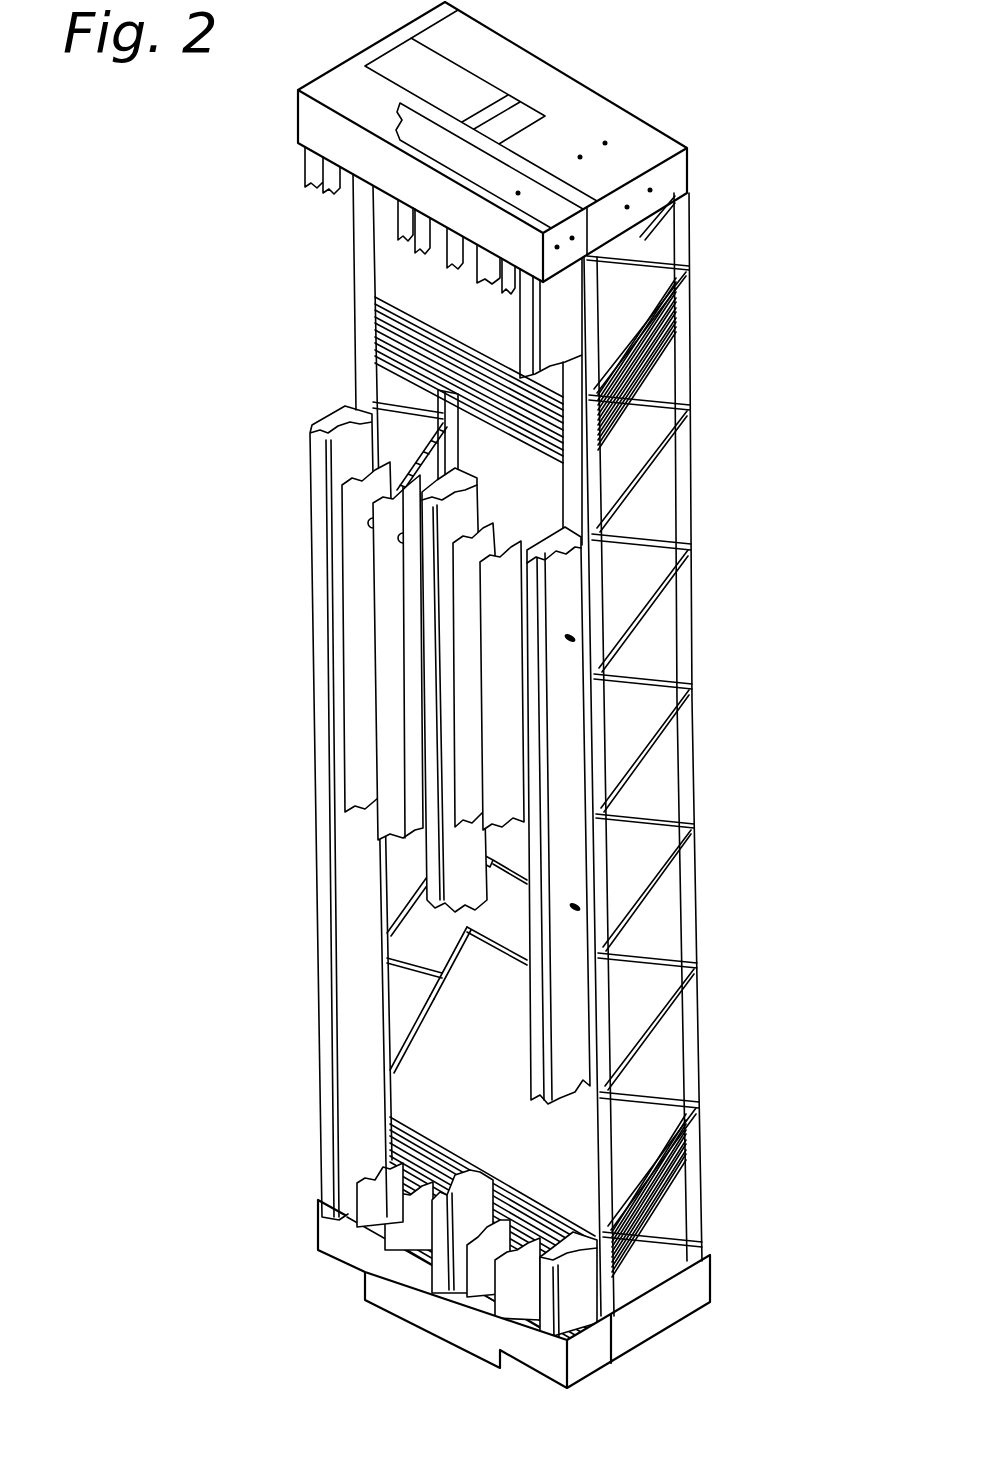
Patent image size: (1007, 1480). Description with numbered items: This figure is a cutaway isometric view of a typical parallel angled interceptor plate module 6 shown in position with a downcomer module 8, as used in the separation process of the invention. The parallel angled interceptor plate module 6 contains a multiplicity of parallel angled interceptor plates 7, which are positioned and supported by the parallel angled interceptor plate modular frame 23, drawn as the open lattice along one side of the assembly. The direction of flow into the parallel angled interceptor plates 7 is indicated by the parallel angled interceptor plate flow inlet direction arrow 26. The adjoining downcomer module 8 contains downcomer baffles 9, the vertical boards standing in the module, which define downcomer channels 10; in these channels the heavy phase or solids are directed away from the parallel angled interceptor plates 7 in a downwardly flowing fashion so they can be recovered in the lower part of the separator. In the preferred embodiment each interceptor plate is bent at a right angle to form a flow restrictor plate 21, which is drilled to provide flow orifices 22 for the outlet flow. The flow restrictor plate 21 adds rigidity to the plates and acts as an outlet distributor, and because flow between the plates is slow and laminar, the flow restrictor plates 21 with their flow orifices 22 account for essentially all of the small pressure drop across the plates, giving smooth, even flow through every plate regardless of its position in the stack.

The parallel angled interceptor plate module 6 is at (697, 780).
The parallel angled interceptor plates 7 is at (663, 335).
The downcomer module 8 is at (315, 767).
The downcomer baffles 9 is at (372, 556).
The downcomer channels 10 is at (528, 538).
The flow restrictor plate 21 is at (417, 1030).
The flow orifices 22 is at (440, 983).
The parallel angled interceptor plate modular frame 23 is at (692, 632).
The parallel angled interceptor plate flow inlet direction arrow 26 is at (650, 360).